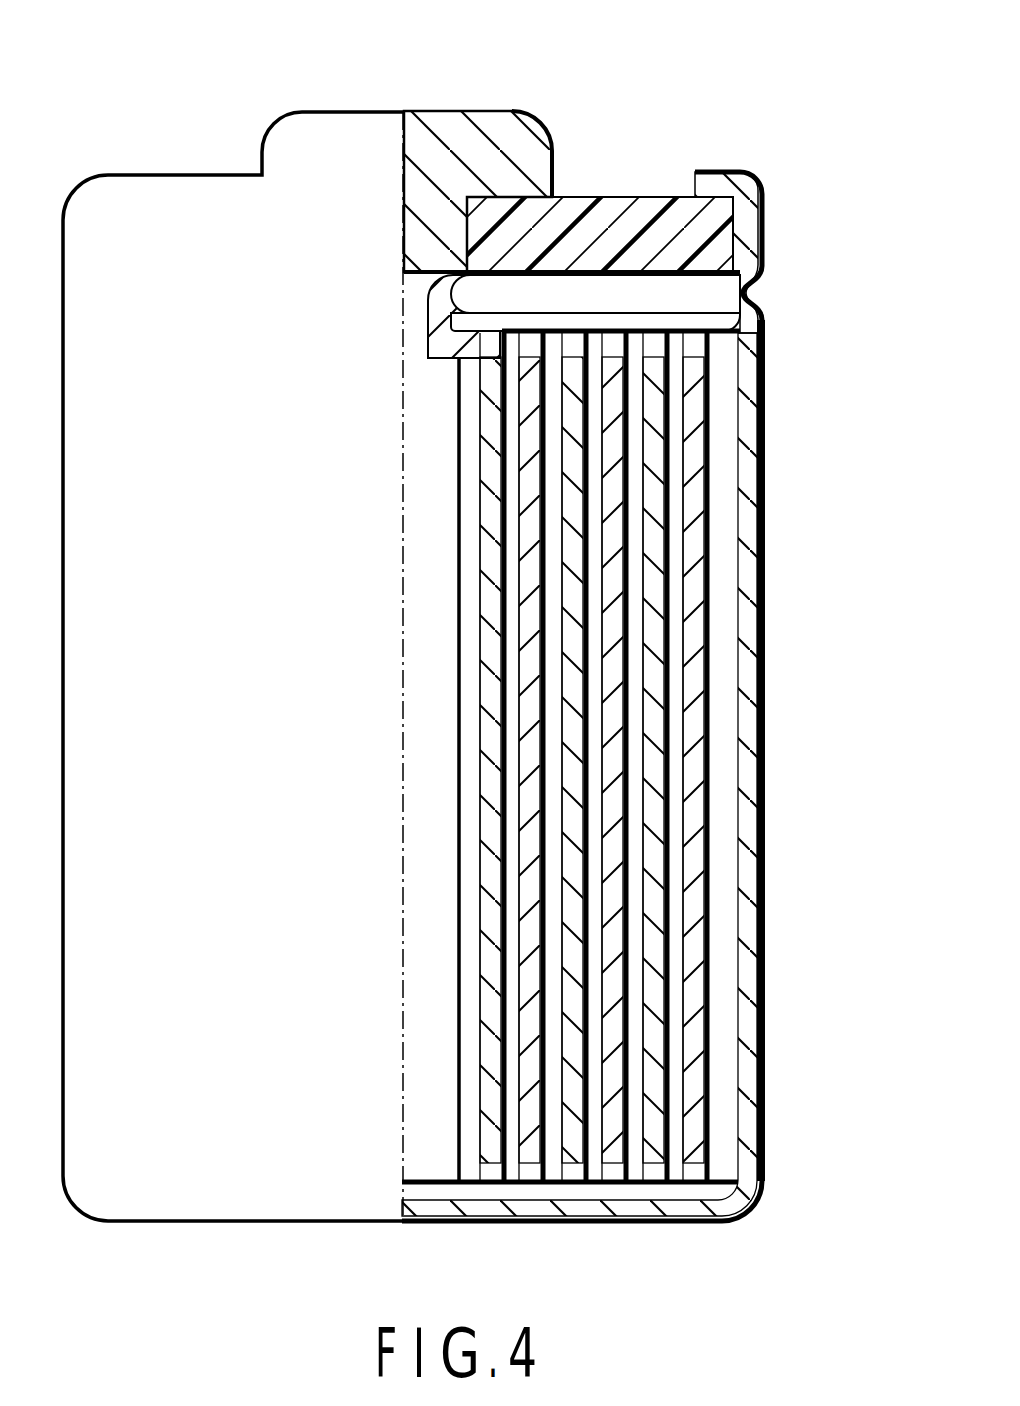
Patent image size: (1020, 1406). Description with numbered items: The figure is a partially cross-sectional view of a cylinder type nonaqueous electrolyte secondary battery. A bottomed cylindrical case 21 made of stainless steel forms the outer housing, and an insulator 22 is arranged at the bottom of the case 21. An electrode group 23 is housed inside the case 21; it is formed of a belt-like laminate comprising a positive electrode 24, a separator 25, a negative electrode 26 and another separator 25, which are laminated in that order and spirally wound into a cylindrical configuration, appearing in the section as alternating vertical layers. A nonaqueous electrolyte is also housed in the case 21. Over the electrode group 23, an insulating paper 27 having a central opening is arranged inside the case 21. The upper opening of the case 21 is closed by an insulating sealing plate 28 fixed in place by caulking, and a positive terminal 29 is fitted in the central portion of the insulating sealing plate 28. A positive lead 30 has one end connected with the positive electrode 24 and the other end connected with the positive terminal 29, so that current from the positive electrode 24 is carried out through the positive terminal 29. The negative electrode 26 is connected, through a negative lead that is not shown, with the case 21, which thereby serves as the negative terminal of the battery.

The case 21 is at (753, 1040).
The insulator 22 is at (663, 1190).
The electrode group 23 is at (654, 756).
The positive electrode 24 is at (665, 487).
The separator 25 is at (677, 527).
The negative electrode 26 is at (842, 435).
The insulating paper 27 is at (707, 321).
The insulating sealing plate 28 is at (612, 223).
The positive terminal 29 is at (482, 138).
The positive lead 30 is at (437, 310).